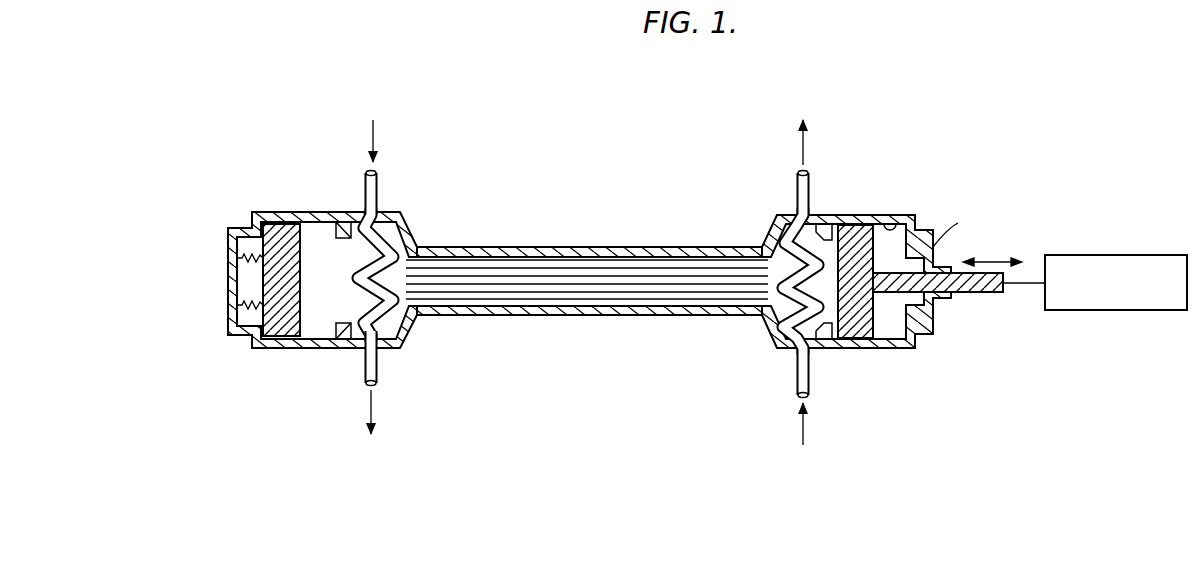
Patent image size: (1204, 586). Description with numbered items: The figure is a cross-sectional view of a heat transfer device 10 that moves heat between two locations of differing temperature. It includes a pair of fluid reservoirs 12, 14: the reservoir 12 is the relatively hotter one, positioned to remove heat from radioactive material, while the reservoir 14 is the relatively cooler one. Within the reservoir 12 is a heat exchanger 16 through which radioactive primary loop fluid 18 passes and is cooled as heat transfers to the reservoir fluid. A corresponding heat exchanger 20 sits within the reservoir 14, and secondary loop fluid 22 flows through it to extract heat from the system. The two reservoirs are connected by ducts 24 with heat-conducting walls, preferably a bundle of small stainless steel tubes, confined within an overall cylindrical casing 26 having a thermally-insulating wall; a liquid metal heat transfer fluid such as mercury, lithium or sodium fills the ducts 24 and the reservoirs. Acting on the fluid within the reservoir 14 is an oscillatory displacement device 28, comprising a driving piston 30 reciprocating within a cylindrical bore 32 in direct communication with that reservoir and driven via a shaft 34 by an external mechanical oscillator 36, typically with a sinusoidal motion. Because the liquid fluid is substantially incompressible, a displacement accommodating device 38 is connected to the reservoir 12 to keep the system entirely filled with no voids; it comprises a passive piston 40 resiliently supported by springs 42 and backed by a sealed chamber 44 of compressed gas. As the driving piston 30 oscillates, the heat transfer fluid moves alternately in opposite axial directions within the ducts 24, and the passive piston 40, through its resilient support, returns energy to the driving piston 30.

The heat transfer device 10 is at (685, 148).
The fluid reservoir 12 is at (405, 227).
The fluid reservoir 14 is at (777, 250).
The heat exchanger 16 is at (394, 257).
The primary loop fluid 18 is at (376, 128).
The heat exchanger 20 is at (771, 318).
The secondary loop fluid 22 is at (805, 150).
The ducts 24 is at (530, 262).
The cylindrical casing 26 is at (688, 247).
The oscillatory displacement device 28 is at (1009, 198).
The driving piston 30 is at (855, 232).
The cylindrical bore 32 is at (891, 226).
The shaft 34 is at (970, 288).
The mechanical oscillator 36 is at (1107, 263).
The displacement accommodating device 38 is at (328, 203).
The passive piston 40 is at (279, 232).
The springs 42 is at (256, 265).
The sealed chamber 44 is at (253, 313).